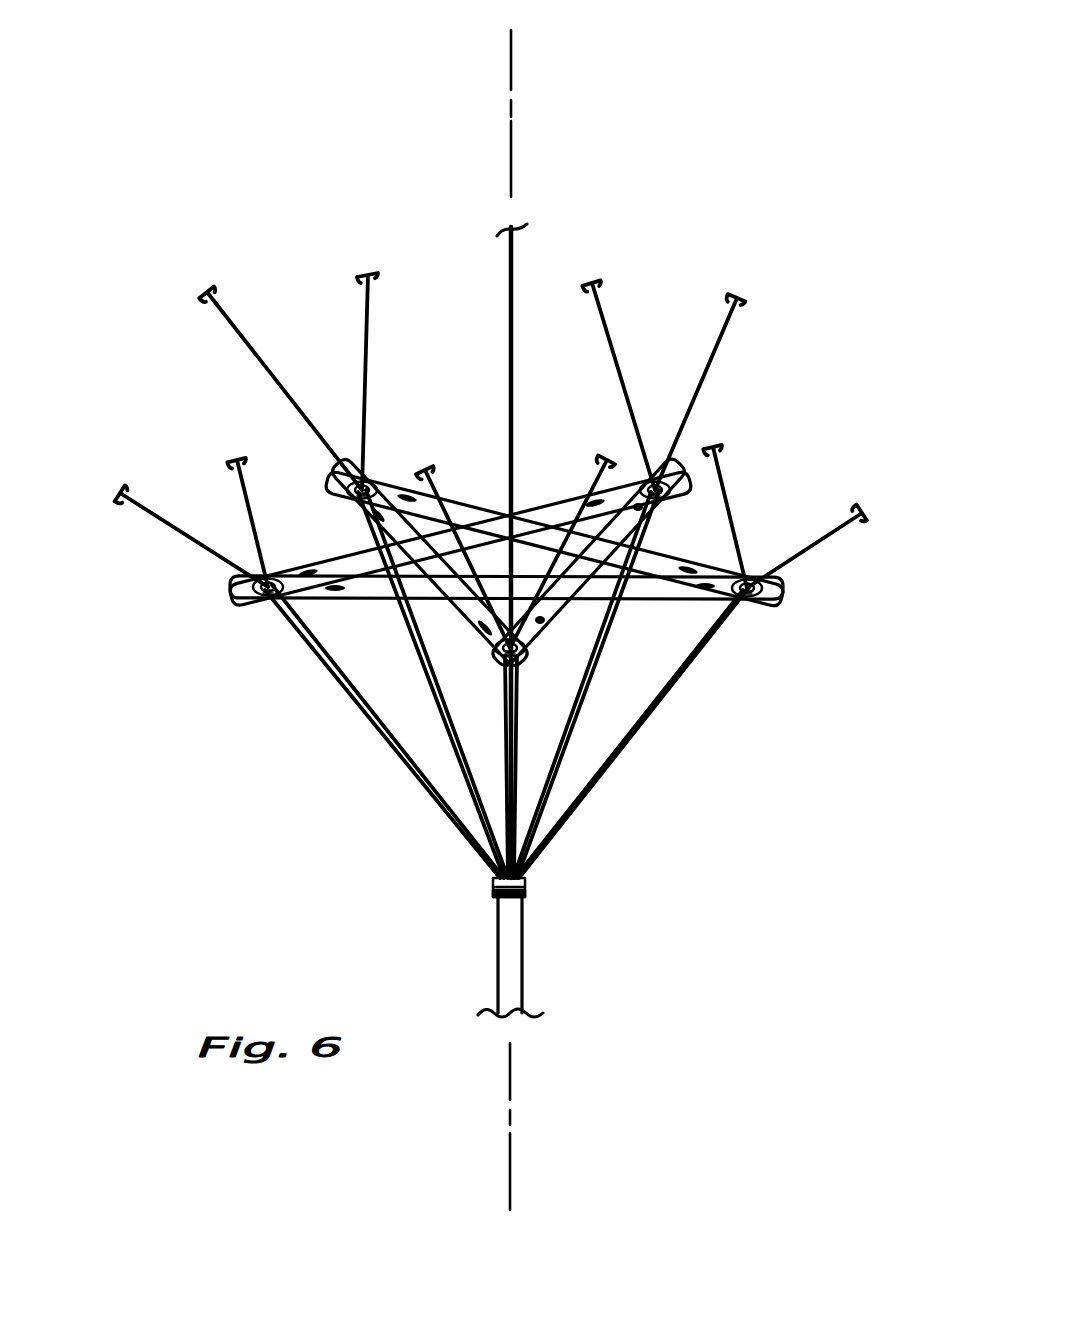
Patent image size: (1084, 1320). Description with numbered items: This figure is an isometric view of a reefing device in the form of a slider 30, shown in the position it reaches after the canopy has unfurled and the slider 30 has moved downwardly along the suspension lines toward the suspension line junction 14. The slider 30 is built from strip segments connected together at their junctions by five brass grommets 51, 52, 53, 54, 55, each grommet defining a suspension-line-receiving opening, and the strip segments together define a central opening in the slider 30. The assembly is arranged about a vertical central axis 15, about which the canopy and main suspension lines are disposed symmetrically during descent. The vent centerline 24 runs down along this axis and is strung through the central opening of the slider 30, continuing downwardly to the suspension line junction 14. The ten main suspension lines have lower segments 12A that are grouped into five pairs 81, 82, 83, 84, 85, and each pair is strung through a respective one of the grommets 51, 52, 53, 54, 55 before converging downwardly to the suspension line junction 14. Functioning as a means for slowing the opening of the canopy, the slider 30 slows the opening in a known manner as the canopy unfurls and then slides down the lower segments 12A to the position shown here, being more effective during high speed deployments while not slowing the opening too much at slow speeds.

The lower segments of the main suspension lines 12A is at (885, 555).
The suspension line junction 14 is at (527, 885).
The vertical central axis 15 is at (513, 58).
The vent centerline 24 is at (511, 265).
The slider 30 is at (368, 602).
The grommet 51 is at (252, 595).
The grommet 52 is at (665, 500).
The grommet 53 is at (517, 660).
The grommet 54 is at (352, 497).
The grommet 55 is at (760, 600).
The pair of lower segments 81 is at (443, 813).
The pair of lower segments 82 is at (570, 738).
The pair of lower segments 83 is at (507, 742).
The pair of lower segments 84 is at (488, 840).
The pair of lower segments 85 is at (596, 790).